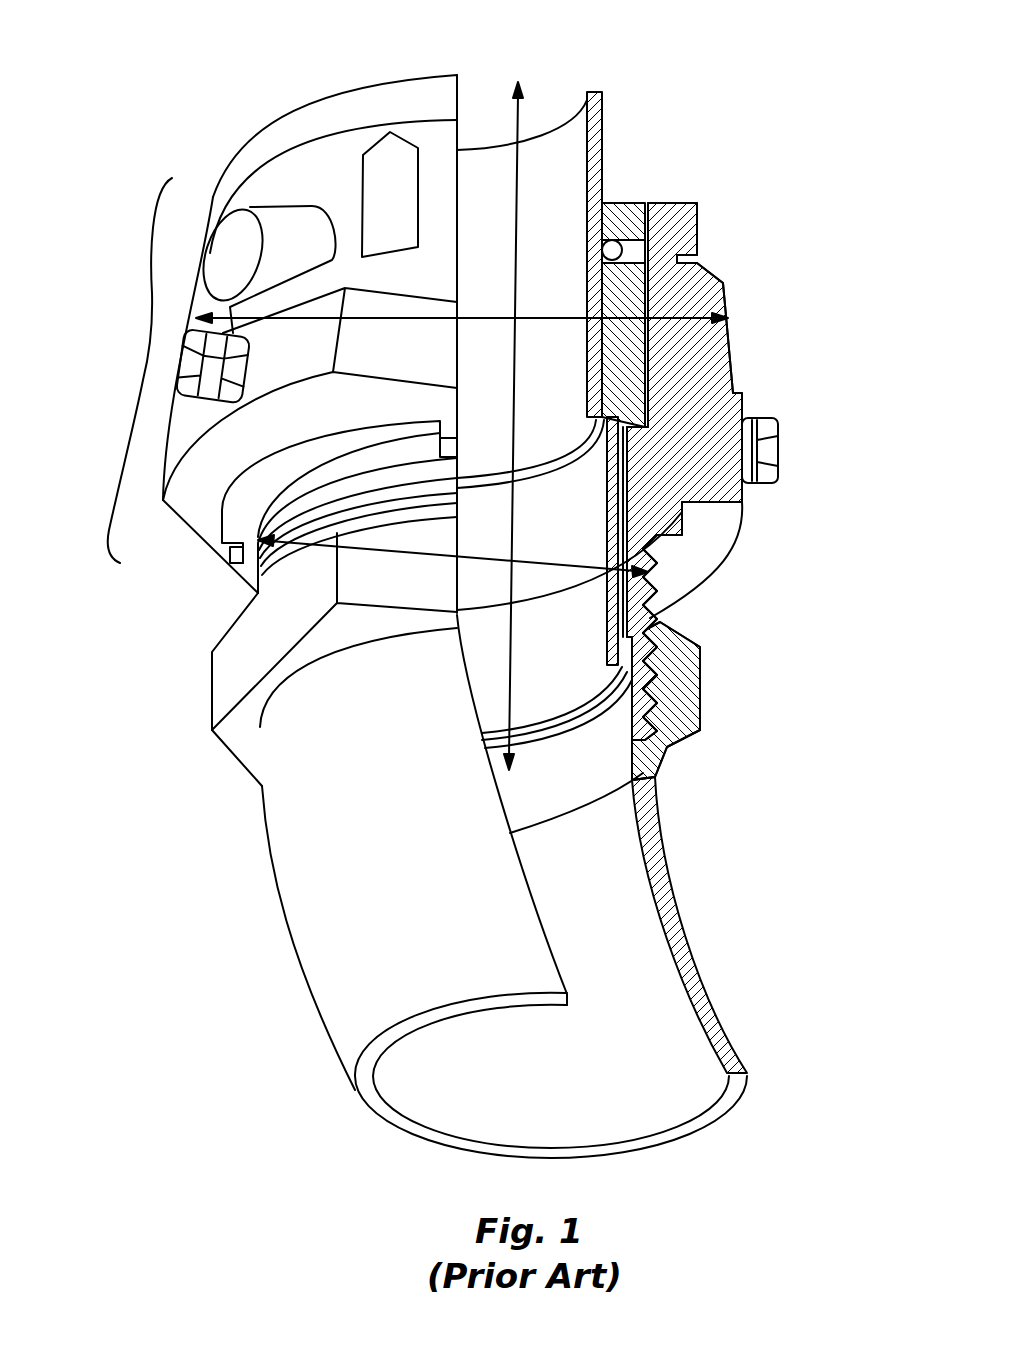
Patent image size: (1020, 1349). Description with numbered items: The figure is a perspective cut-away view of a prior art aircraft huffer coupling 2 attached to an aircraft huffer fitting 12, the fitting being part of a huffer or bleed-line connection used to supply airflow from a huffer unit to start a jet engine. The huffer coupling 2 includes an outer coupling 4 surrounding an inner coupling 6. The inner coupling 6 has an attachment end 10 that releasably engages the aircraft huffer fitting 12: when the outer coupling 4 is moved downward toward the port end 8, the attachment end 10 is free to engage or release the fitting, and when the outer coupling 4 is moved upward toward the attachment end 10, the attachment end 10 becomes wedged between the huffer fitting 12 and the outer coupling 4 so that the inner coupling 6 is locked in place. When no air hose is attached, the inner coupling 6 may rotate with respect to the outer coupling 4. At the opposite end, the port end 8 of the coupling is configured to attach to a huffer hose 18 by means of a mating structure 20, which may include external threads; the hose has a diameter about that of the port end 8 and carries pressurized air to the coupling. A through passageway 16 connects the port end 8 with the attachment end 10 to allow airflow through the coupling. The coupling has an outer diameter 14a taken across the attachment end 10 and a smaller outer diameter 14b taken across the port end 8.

The huffer coupling 2 is at (140, 370).
The outer coupling 4 is at (315, 123).
The inner coupling 6 is at (625, 217).
The port end 8 is at (257, 590).
The attachment end 10 is at (405, 70).
The aircraft huffer fitting 12 is at (535, 167).
The outer diameter 14a is at (530, 315).
The outer diameter 14b is at (523, 560).
The through passageway 16 is at (513, 222).
The huffer hose 18 is at (325, 938).
The mating structure 20 is at (258, 560).